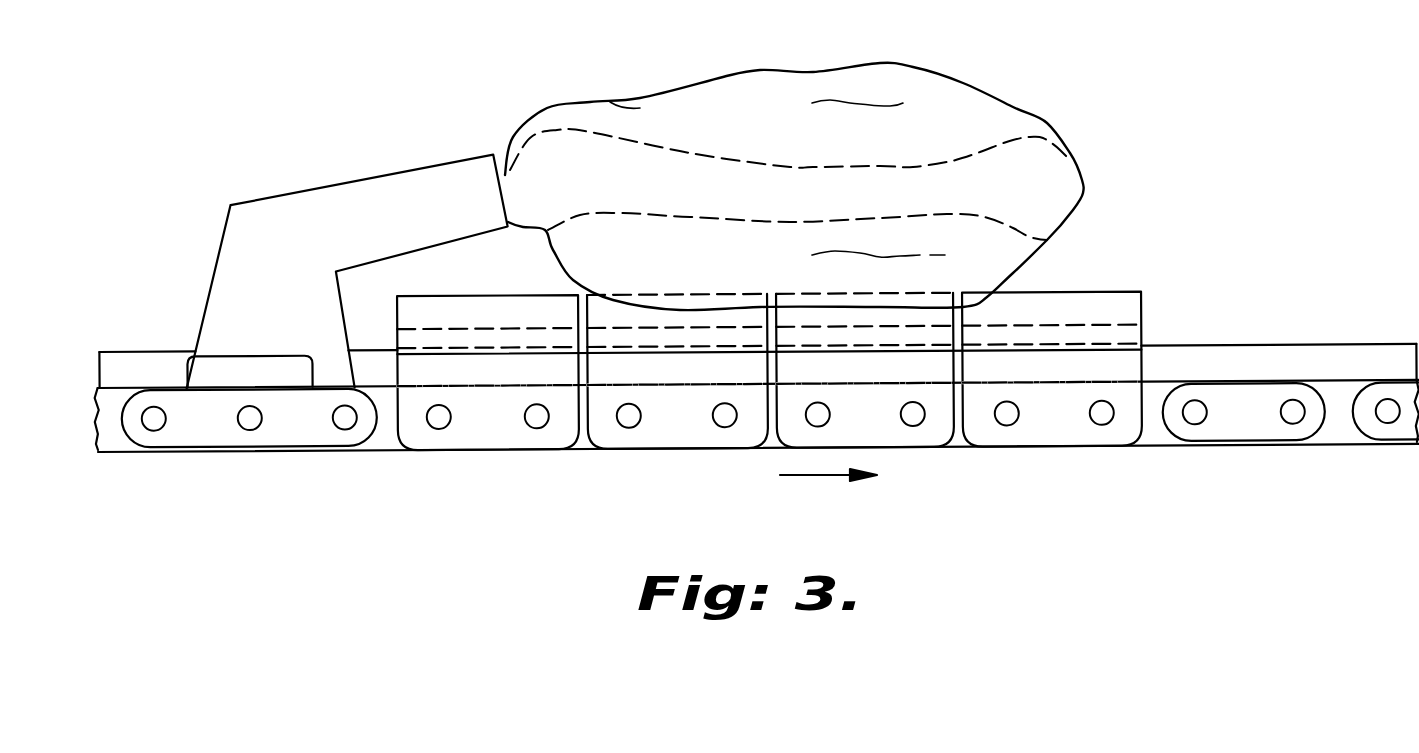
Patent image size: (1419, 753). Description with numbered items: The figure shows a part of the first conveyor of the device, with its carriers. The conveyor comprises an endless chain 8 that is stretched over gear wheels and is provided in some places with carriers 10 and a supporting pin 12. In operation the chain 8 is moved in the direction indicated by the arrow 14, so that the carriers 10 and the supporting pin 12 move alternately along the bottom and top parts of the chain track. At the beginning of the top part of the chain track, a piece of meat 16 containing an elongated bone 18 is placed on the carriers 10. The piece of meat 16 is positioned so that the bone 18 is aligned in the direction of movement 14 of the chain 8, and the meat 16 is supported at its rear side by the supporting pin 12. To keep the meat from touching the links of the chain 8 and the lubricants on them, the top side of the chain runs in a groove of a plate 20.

The endless chain 8 is at (1228, 427).
The carriers 10 is at (483, 310).
The supporting pin 12 is at (232, 271).
The direction of movement 14 is at (812, 478).
The piece of meat 16 is at (723, 102).
The elongated bone 18 is at (585, 130).
The plate 20 is at (140, 365).